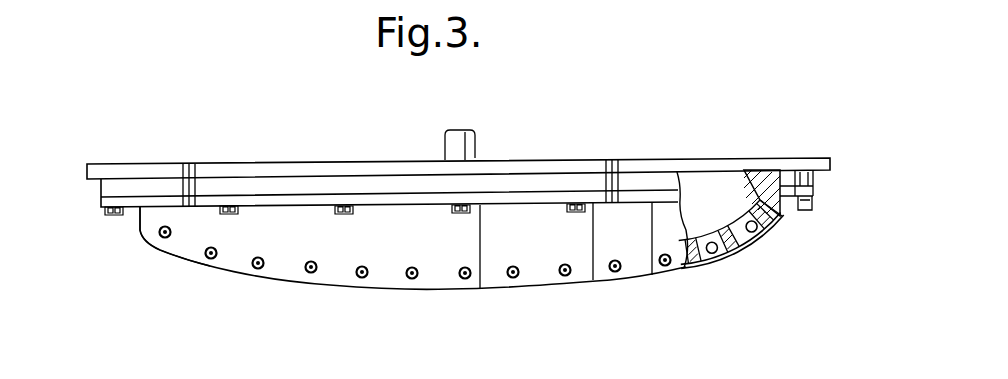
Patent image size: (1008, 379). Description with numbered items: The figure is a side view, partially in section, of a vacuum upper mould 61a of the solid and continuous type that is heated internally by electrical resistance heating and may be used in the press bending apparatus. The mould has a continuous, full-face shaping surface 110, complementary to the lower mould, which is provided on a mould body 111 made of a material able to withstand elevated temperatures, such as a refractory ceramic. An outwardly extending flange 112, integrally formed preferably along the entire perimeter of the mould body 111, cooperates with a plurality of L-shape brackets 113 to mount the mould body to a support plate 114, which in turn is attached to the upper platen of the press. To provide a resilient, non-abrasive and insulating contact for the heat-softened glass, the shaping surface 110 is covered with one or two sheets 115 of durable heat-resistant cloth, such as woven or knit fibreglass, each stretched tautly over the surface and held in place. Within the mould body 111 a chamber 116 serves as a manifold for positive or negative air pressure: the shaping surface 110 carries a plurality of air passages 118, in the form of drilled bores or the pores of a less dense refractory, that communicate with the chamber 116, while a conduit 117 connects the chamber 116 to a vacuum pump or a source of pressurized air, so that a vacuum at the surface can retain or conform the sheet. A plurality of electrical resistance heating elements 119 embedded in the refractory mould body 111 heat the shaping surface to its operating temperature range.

The vacuum upper mould 61a is at (571, 140).
The shaping surface 110 is at (449, 290).
The mould body 111 is at (182, 260).
The outwardly extending flange 112 is at (780, 176).
The L-shape brackets 113 is at (813, 204).
The support plate 114 is at (315, 162).
The sheets of heat-resistant cloth 115 is at (744, 249).
The chamber 116 is at (705, 190).
The conduit 117 is at (455, 143).
The air passages 118 is at (726, 258).
The heating elements 119 is at (258, 269).